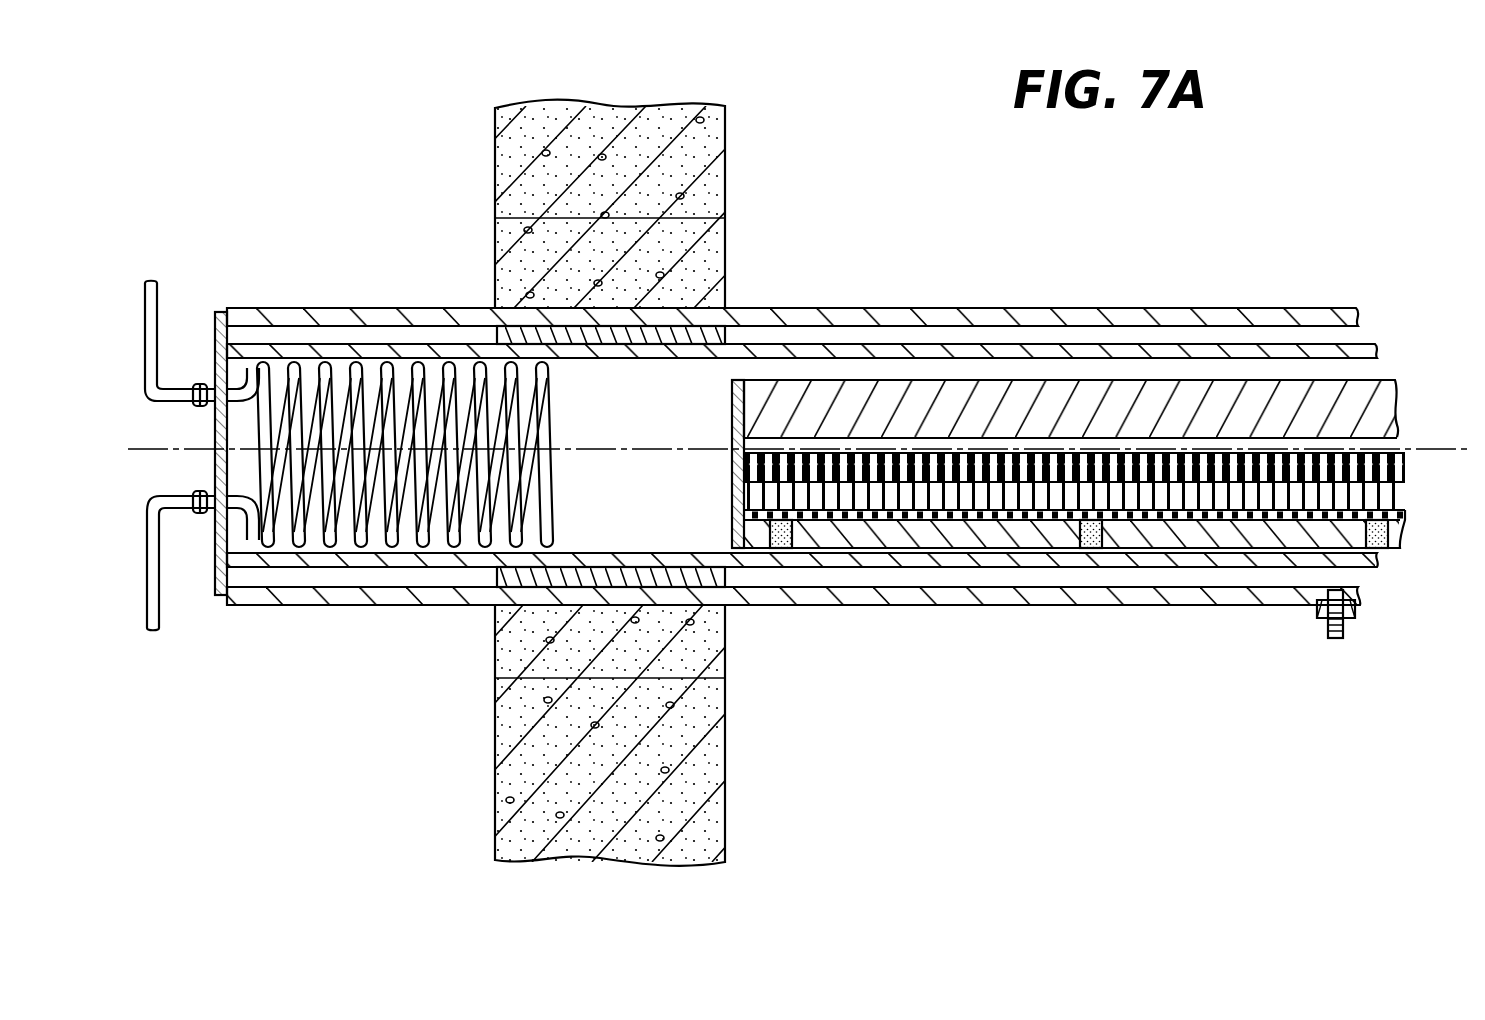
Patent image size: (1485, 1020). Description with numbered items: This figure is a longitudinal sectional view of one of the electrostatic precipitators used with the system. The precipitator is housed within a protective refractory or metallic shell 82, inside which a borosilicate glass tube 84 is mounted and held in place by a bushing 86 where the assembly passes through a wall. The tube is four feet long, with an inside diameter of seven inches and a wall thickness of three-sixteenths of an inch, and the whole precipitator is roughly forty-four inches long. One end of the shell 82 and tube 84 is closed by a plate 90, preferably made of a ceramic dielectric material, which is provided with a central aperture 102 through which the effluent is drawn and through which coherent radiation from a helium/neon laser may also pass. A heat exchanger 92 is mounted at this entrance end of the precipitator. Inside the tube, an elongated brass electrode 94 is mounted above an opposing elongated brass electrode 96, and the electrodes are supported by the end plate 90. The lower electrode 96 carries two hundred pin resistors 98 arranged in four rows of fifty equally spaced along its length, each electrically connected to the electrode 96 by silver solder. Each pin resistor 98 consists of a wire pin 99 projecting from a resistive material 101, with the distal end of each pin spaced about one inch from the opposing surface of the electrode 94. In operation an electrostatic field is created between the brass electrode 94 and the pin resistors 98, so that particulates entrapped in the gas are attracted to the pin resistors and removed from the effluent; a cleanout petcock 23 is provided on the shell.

The cleanout petcock 23 is at (1345, 630).
The protective shell 82 is at (1077, 315).
The borosilicate glass tube 84 is at (925, 348).
The bushing 86 is at (728, 330).
The end plate 90 is at (217, 587).
The heat exchanger 92 is at (543, 407).
The brass electrode 94 is at (1388, 413).
The brass electrode 96 is at (1403, 533).
The pin resistor 98 is at (1383, 498).
The wire pin 99 is at (1397, 462).
The resistive material 101 is at (1300, 502).
The central aperture 102 is at (215, 445).